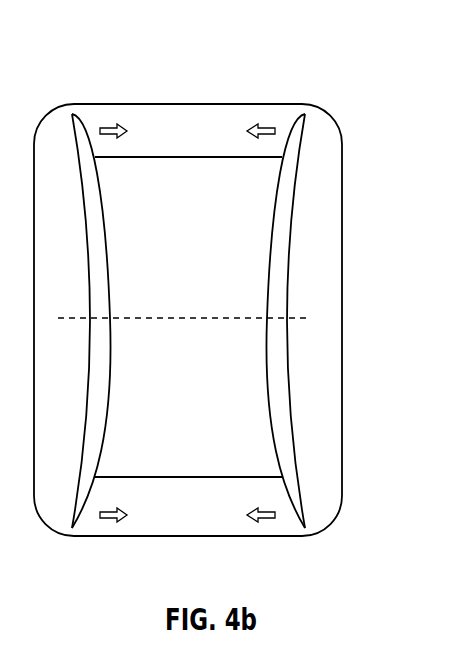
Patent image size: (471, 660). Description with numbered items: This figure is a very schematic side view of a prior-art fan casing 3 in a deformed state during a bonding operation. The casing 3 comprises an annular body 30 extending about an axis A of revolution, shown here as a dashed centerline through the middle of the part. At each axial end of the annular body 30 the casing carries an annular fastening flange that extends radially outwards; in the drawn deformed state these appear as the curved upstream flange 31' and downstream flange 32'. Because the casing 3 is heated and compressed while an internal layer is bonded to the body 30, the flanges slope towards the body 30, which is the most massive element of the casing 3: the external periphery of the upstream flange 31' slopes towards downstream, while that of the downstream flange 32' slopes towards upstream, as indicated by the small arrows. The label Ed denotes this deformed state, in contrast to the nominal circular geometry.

The casing 3 is at (325, 176).
The annular body 30 is at (295, 448).
The upstream fastening flange in deformed state 31' is at (85, 286).
The downstream fastening flange in deformed state 32' is at (289, 183).
The axis of revolution A is at (295, 317).
The edge direction Ed is at (192, 93).